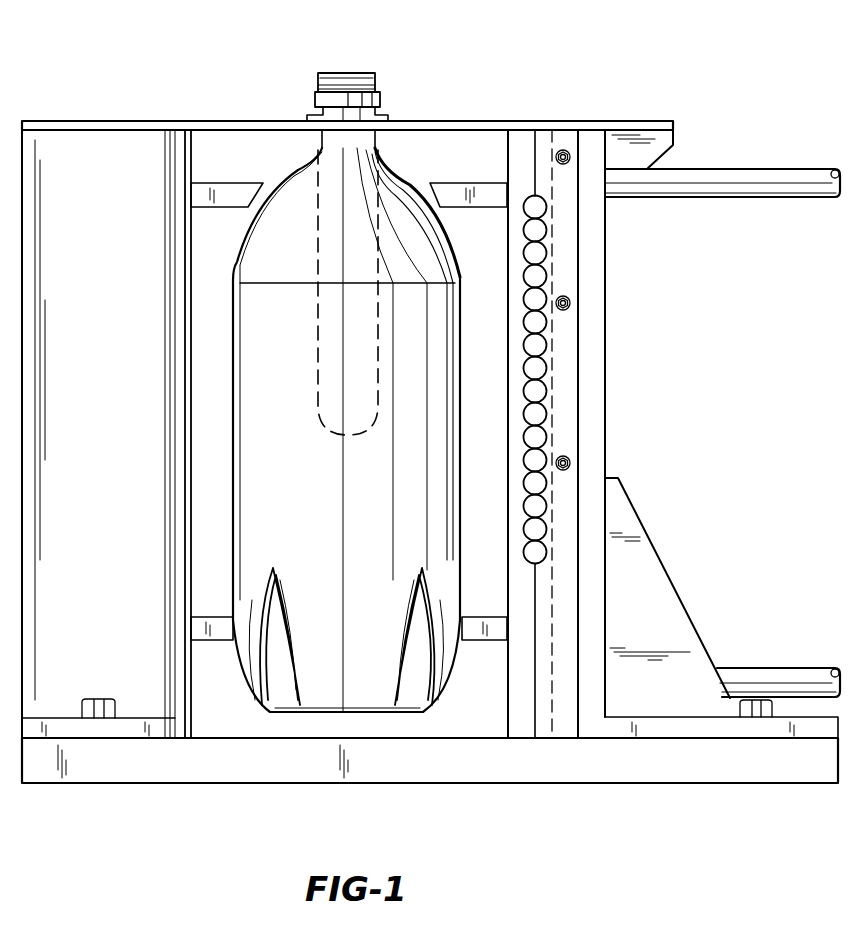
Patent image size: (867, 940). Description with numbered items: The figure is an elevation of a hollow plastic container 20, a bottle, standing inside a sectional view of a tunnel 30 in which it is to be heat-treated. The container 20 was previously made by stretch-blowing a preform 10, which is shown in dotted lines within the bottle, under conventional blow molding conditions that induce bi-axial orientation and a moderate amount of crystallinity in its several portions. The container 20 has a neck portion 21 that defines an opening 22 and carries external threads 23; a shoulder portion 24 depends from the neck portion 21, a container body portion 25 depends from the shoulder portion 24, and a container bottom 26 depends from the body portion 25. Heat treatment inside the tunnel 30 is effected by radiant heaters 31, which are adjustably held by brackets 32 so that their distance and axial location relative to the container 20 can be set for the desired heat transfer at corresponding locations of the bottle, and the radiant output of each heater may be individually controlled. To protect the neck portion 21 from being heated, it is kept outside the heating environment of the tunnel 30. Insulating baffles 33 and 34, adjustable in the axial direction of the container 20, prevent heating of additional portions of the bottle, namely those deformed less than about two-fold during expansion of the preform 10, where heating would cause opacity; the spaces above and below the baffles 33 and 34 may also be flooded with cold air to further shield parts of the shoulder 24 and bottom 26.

The preform 10 is at (318, 358).
The container 20 is at (291, 413).
The neck portion 21 is at (381, 99).
The opening 22 is at (350, 76).
The external threads 23 is at (377, 84).
The shoulder portion 24 is at (437, 193).
The container body portion 25 is at (238, 413).
The container bottom 26 is at (323, 682).
The tunnel 30 is at (590, 396).
The radiant heaters 31 is at (538, 276).
The brackets 32 is at (558, 717).
The insulating baffle 33 is at (472, 186).
The insulating baffle 34 is at (487, 642).